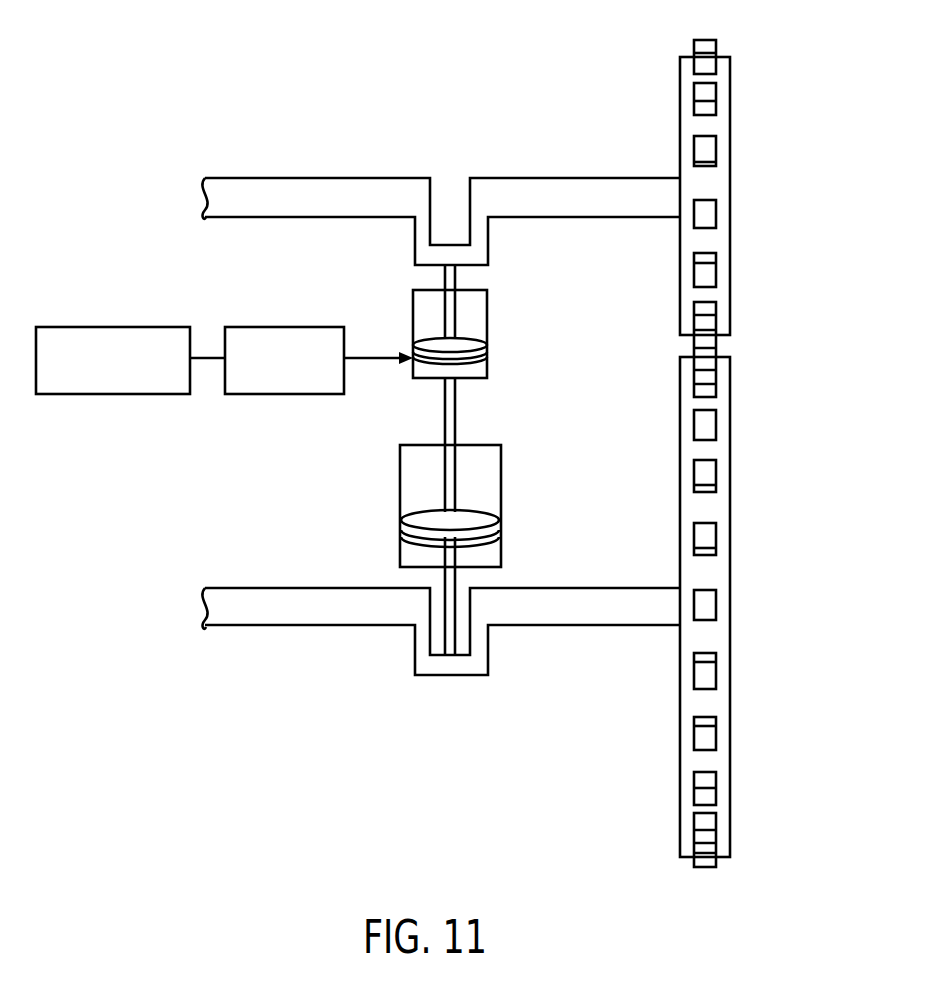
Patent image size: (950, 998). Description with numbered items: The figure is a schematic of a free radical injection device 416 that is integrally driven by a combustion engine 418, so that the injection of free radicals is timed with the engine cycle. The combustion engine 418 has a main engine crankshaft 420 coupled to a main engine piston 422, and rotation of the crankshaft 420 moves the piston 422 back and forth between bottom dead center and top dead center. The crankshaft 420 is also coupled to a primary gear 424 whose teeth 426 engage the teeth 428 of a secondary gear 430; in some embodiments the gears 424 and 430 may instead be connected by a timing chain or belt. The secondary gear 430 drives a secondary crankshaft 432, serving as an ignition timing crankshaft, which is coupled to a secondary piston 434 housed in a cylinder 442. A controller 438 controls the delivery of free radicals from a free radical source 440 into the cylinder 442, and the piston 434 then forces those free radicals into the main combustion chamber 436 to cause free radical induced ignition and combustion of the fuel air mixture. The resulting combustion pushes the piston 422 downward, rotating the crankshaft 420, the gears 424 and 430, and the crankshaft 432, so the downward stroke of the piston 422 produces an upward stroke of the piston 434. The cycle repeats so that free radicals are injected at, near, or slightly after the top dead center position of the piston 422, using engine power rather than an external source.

The free radical injection device 416 is at (360, 287).
The combustion engine 418 is at (495, 86).
The main engine crankshaft 420 is at (363, 625).
The main engine piston 422 is at (420, 518).
The primary gear 424 is at (718, 450).
The teeth 426 is at (717, 420).
The teeth 428 is at (717, 272).
The secondary gear 430 is at (710, 124).
The secondary crankshaft 432 is at (565, 178).
The secondary piston 434 is at (473, 343).
The main combustion chamber 436 is at (485, 469).
The controller 438 is at (113, 394).
The free radical source 440 is at (287, 394).
The cylinder 442 is at (482, 365).